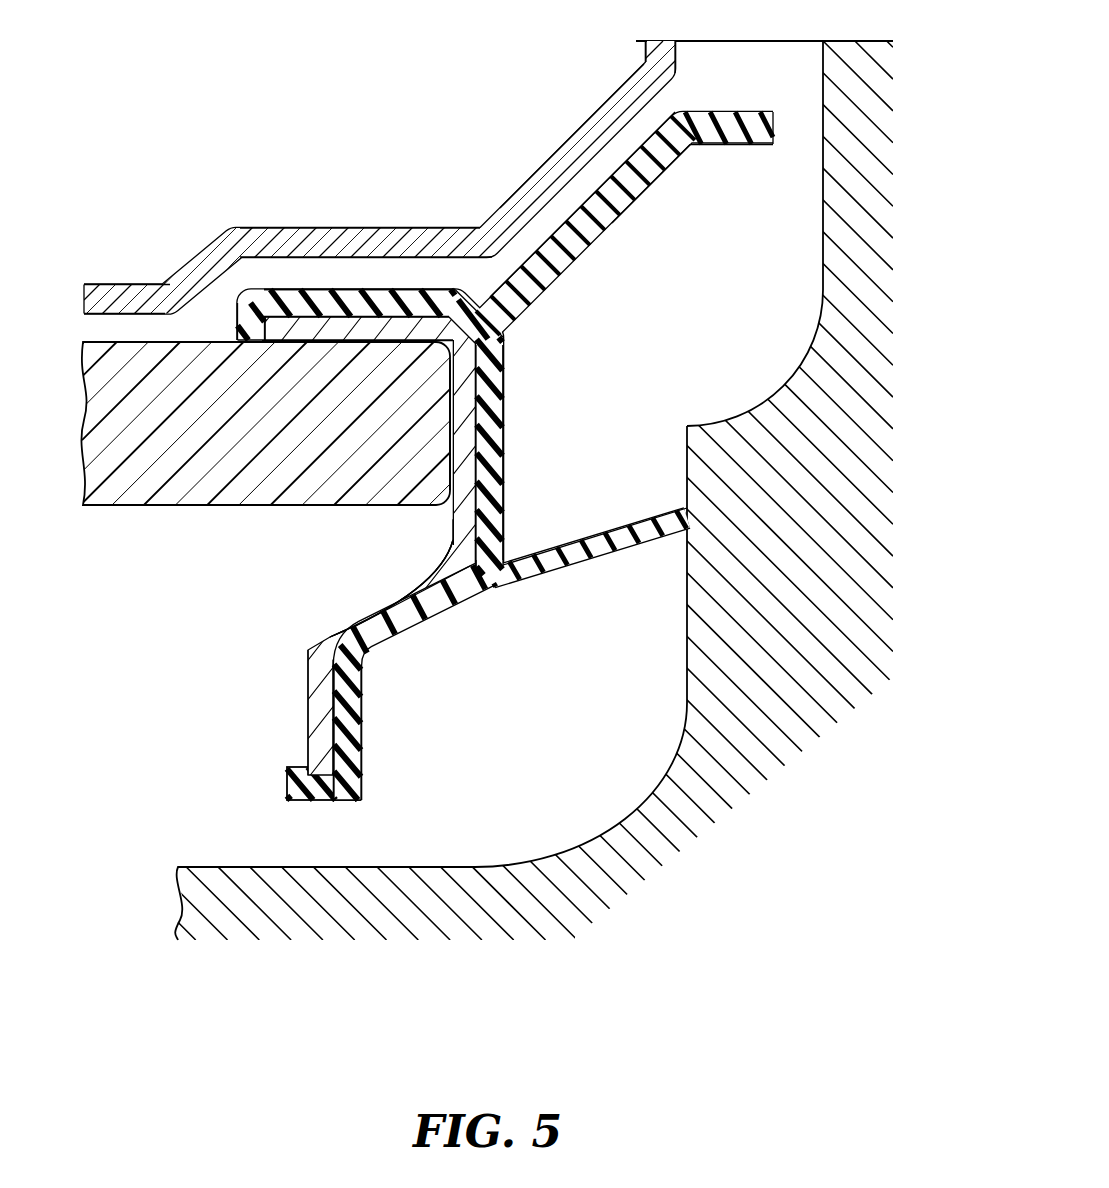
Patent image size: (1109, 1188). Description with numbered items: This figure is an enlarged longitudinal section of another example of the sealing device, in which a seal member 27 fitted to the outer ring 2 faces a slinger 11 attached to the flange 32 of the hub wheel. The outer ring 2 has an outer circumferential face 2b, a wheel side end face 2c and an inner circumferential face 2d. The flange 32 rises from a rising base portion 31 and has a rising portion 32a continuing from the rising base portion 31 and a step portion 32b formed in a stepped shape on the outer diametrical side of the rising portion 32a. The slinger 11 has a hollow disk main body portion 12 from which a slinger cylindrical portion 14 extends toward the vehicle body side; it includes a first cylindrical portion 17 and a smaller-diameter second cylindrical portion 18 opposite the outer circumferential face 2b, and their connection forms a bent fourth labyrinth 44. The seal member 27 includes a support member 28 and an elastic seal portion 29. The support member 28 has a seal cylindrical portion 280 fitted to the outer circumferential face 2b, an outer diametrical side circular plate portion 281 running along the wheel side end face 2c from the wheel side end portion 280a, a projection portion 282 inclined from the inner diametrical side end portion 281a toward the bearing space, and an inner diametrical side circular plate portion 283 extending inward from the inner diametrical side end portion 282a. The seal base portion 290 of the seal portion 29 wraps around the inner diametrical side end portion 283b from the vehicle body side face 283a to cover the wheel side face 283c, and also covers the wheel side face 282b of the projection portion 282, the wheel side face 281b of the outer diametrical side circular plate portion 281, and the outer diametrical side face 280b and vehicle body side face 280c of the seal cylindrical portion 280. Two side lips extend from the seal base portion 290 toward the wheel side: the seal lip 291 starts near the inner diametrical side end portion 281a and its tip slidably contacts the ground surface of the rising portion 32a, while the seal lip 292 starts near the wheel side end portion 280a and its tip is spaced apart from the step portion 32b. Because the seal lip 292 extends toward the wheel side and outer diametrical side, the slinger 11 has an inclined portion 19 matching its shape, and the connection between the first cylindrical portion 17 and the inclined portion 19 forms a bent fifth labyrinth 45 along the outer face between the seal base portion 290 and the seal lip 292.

The outer ring 2 is at (108, 422).
The outer circumferential face of the outer ring 2b is at (123, 340).
The wheel side end face of the outer ring 2c is at (452, 398).
The inner circumferential face of the outer ring 2d is at (108, 510).
The slinger 11 is at (596, 104).
The main body portion 12 is at (644, 58).
The slinger cylindrical portion 14 is at (381, 177).
The first cylindrical portion 17 is at (390, 226).
The second cylindrical portion 18 is at (110, 285).
The inclined portion 19 is at (567, 143).
The seal member 27 is at (214, 628).
The support member 28 is at (303, 640).
The seal portion 29 is at (329, 670).
The rising base portion 31 is at (578, 917).
The flange 32 is at (868, 598).
The rising portion 32a is at (685, 617).
The step portion 32b is at (822, 217).
The fourth labyrinth 44 is at (230, 290).
The fifth labyrinth 45 is at (502, 262).
The seal cylindrical portion 280 is at (352, 327).
The wheel side end portion of the seal cylindrical portion 280a is at (457, 333).
The outer diametrical side face of the seal cylindrical portion 280b is at (282, 313).
The vehicle body side face of the seal cylindrical portion 280c is at (242, 320).
The outer diametrical side circular plate portion 281 is at (478, 385).
The inner diametrical side end portion of the outer diametrical side circular plate 281a is at (460, 570).
The wheel side face of the outer diametrical side circular plate portion 281b is at (483, 465).
The projection portion 282 is at (408, 580).
The inner diametrical side end portion of the projection portion 282a is at (333, 625).
The wheel side face of the projection portion 282b is at (433, 608).
The inner diametrical side circular plate portion 283 is at (327, 693).
The vehicle body side face of the inner diametrical side circular plate portion 283a is at (307, 743).
The inner diametrical side end portion of the inner diametrical side circular plate 283b is at (292, 766).
The wheel side face of the inner diametrical side circular plate portion 283c is at (335, 723).
The seal base portion 290 is at (393, 296).
The seal lip 291 is at (631, 524).
The seal lip 292 is at (614, 220).